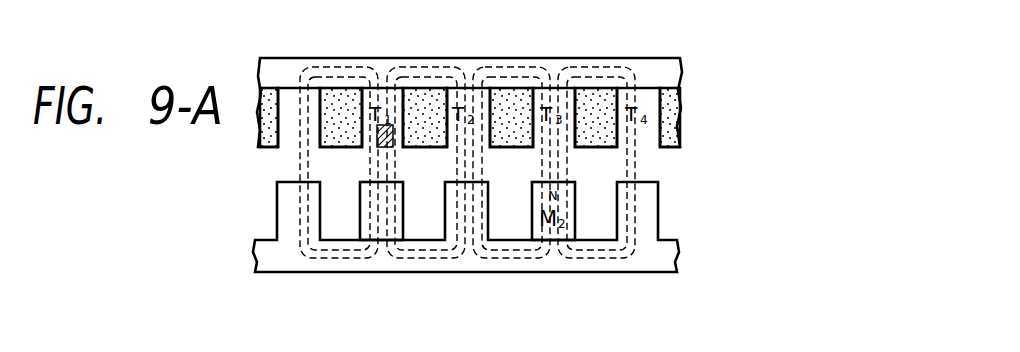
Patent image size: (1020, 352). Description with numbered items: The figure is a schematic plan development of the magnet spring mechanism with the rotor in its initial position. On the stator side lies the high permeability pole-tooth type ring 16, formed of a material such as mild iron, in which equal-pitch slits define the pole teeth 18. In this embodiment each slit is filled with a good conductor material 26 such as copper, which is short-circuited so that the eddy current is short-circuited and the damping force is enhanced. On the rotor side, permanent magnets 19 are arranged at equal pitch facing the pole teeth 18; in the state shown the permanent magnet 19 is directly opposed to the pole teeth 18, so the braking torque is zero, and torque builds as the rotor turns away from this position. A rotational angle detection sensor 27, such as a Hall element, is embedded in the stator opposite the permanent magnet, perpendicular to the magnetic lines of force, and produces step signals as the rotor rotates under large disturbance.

The high permeability pole-tooth type ring 16 is at (650, 68).
The pole teeth 18 is at (365, 115).
The permanent magnet 19 is at (407, 228).
The good conductor material 26 is at (592, 96).
The rotational angle detection sensor 27 is at (378, 124).